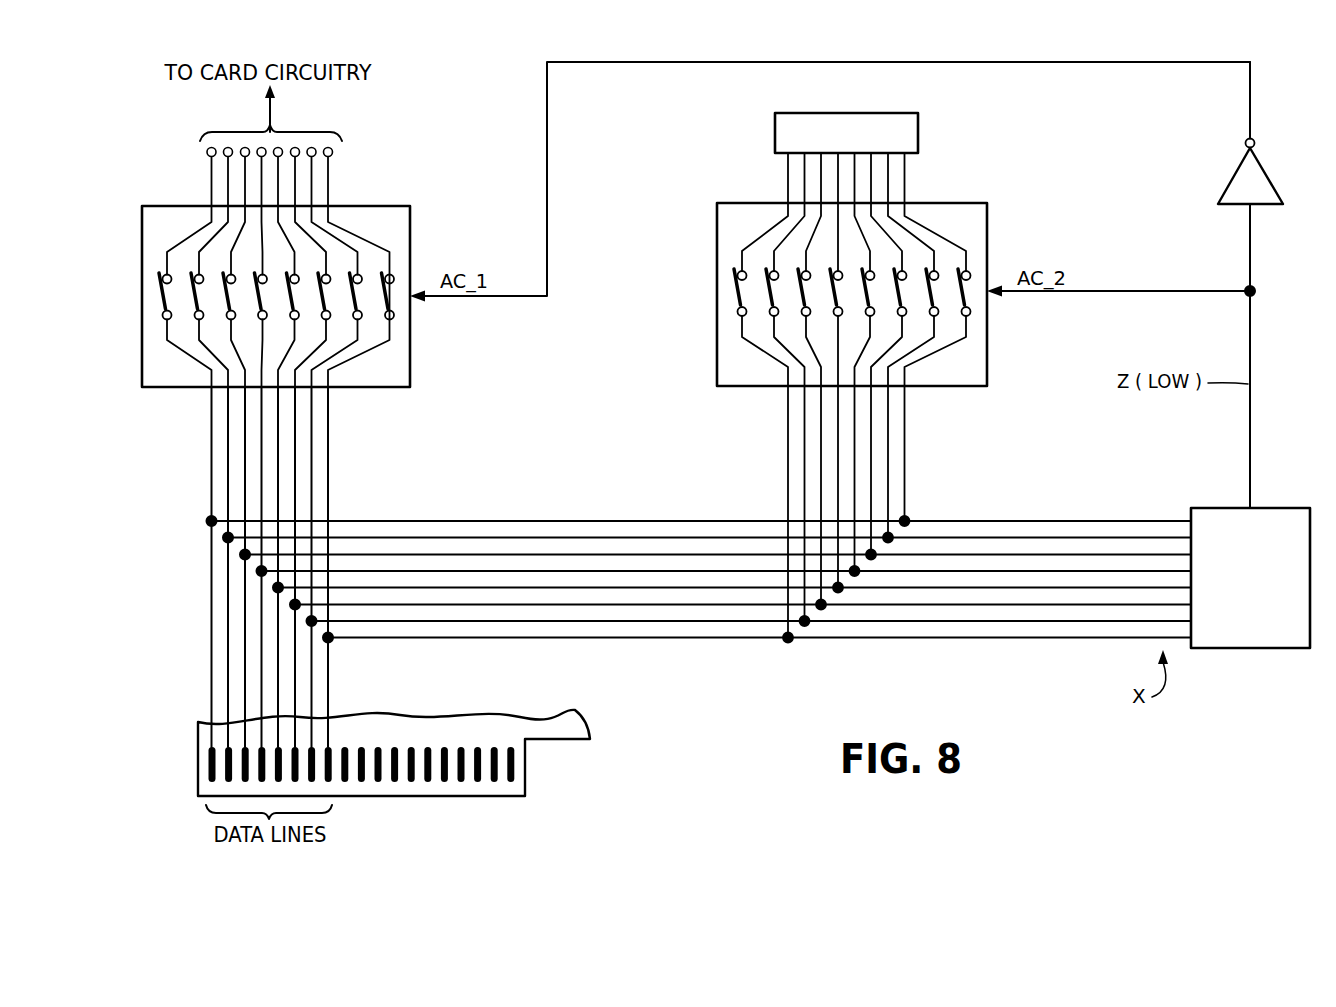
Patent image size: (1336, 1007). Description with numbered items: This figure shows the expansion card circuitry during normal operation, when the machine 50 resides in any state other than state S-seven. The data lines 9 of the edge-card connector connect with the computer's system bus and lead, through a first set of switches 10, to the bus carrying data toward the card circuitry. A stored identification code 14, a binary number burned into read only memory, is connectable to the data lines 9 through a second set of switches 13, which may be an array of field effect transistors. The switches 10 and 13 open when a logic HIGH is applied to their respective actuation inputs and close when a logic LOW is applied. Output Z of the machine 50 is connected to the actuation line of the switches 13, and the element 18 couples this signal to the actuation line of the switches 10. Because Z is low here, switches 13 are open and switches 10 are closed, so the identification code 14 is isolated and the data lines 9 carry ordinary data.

The data lines 9 is at (278, 468).
The switches 10 is at (410, 205).
The switches 13 is at (987, 203).
The identification code 14 is at (775, 125).
The inverter 18 is at (1238, 182).
The machine 50 is at (1197, 506).